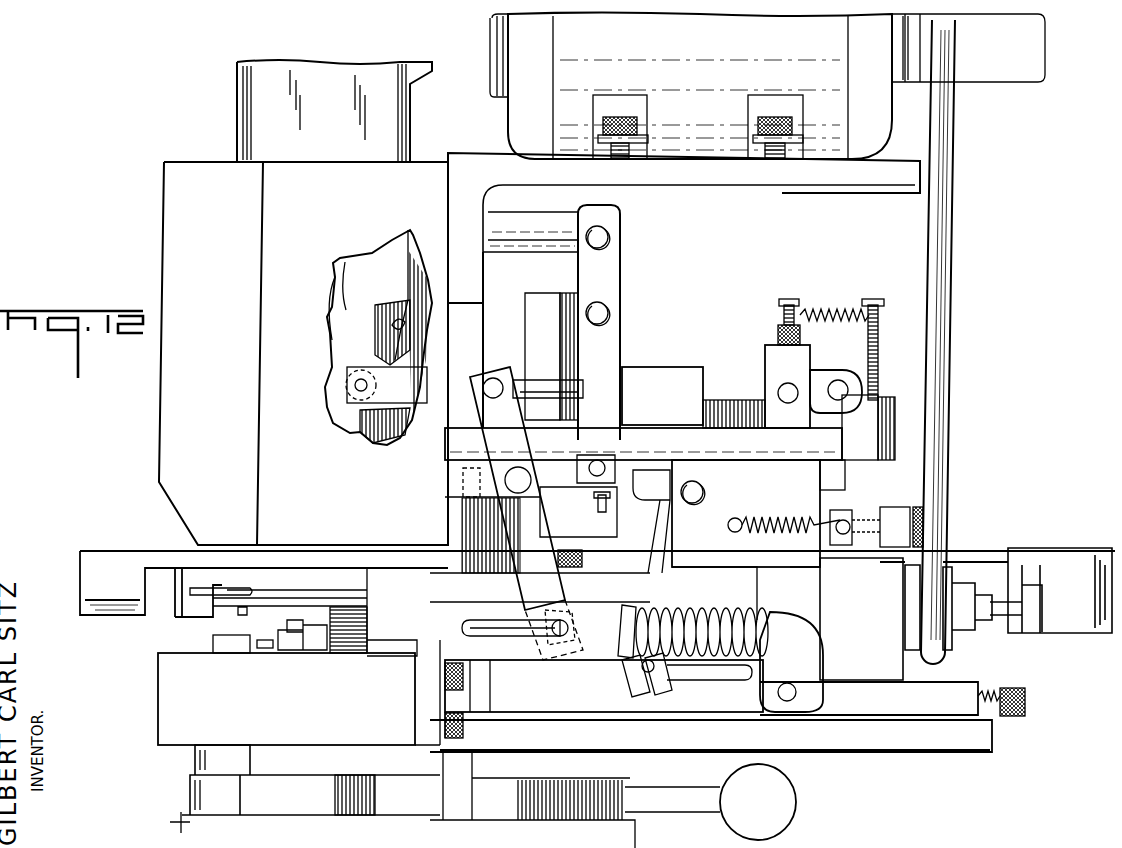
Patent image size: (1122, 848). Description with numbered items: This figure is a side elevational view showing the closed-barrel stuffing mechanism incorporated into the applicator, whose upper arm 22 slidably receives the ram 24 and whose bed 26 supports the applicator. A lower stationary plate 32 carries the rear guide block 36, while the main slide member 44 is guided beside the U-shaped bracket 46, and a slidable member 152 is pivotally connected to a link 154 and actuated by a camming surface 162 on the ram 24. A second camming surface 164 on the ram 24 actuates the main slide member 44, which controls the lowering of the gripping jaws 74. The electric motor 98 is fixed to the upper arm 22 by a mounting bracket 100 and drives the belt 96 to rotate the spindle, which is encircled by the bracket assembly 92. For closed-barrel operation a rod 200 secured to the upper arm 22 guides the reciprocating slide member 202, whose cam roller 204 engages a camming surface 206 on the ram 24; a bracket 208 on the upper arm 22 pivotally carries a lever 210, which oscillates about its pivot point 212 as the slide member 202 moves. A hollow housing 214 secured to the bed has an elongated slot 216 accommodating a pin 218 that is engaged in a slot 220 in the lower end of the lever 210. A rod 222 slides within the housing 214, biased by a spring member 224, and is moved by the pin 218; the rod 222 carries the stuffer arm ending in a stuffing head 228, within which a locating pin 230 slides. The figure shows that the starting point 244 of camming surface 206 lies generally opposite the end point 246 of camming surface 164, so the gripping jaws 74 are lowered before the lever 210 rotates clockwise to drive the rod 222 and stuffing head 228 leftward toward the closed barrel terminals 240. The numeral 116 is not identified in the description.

The ram 24 is at (338, 76).
The camming surface 162 is at (412, 84).
The electric motor 98 is at (862, 106).
The mounting bracket 100 is at (770, 180).
The upper arm 22 is at (444, 322).
The slidable member 152 is at (547, 228).
The link 154 is at (612, 269).
The end point 246 is at (430, 302).
The camming surface 206 is at (335, 288).
The starting point 244 is at (348, 308).
The camming surface 164 is at (402, 326).
The cam roller 204 is at (346, 382).
The slide member 202 is at (378, 418).
The pivot point 212 is at (520, 494).
The rod 200 is at (572, 398).
The lever 210 is at (535, 440).
The bracket 208 is at (455, 485).
The main slide member 44 is at (664, 384).
The U-shaped bracket 46 is at (767, 360).
The rear guide block 36 is at (777, 492).
The spring member 224 is at (762, 613).
The gripping jaws 74 is at (122, 551).
The stop 116 is at (182, 618).
The stuffing head 228 is at (275, 638).
The rod 222 is at (350, 626).
The closed barrel terminals 240 is at (226, 648).
The locating pin 230 is at (267, 651).
The hollow housing 214 is at (396, 640).
The bed 26 is at (171, 822).
The pin 218 is at (562, 642).
The elongated slot 216 is at (470, 628).
The slot 220 is at (568, 633).
The lower stationary plate 32 is at (838, 746).
The bracket assembly 92 is at (1002, 536).
The belt 96 is at (956, 333).